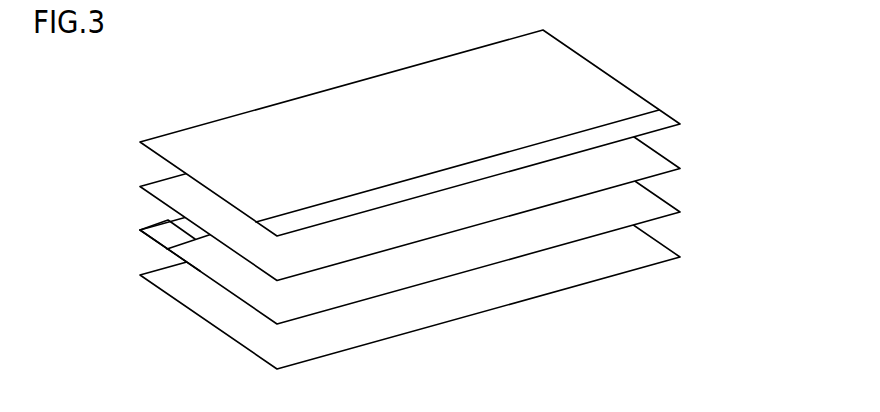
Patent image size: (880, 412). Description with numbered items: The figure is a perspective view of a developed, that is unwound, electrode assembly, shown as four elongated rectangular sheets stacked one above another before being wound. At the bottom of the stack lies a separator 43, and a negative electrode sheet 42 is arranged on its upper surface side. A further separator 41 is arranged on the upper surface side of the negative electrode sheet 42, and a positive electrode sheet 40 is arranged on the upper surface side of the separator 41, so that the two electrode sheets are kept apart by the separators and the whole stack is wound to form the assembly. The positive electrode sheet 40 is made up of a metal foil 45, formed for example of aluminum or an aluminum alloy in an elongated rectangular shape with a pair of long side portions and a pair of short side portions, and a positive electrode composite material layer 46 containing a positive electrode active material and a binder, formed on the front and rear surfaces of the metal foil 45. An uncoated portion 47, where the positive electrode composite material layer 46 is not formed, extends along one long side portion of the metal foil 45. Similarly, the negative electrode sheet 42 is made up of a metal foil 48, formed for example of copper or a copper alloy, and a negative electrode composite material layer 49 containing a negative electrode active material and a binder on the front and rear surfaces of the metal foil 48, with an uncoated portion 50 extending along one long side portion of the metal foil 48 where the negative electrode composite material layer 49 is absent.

The positive electrode sheet 40 is at (469, 133).
The separator 41 is at (653, 192).
The negative electrode sheet 42 is at (393, 221).
The separator 43 is at (665, 262).
The metal foil 45 is at (663, 132).
The positive electrode composite material layer 46 is at (617, 100).
The uncoated portion 47 is at (583, 153).
The metal foil 48 is at (157, 225).
The negative electrode composite material layer 49 is at (170, 260).
The uncoated portion 50 is at (167, 221).